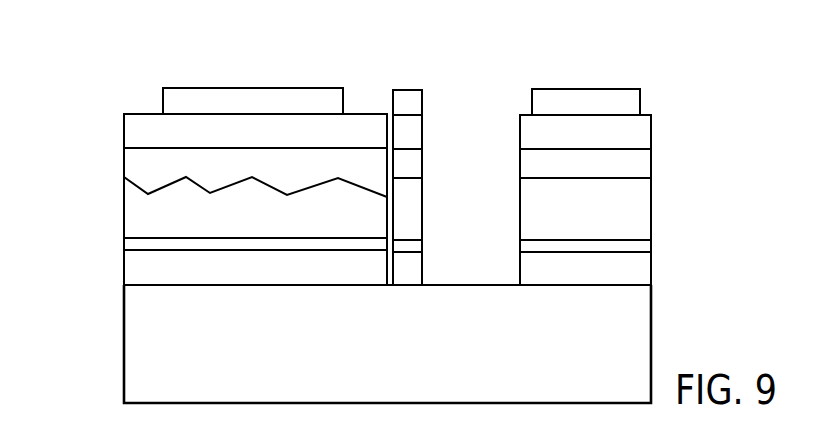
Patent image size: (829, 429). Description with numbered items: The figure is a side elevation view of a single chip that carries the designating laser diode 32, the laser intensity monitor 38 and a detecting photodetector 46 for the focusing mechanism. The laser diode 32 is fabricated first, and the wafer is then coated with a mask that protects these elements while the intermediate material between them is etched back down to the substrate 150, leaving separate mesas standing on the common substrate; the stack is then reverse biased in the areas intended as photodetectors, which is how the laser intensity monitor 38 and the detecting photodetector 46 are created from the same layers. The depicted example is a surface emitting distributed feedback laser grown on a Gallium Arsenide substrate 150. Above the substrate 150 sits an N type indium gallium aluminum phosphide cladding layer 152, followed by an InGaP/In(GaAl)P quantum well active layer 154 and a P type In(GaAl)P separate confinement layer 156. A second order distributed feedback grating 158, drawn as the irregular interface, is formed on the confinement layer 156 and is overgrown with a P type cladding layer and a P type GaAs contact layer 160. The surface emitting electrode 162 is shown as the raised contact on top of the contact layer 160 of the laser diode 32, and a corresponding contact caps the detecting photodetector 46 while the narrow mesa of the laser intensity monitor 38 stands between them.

The Gallium Arsenide substrate 150 is at (124, 349).
The N type cladding layer 152 is at (124, 275).
The quantum well active layer 154 is at (124, 243).
The separate confinement layer 156 is at (124, 212).
The second order distributed feedback grating 158 is at (124, 163).
The P type GaAs contact layer 160 is at (124, 130).
The surface emitting electrode 162 is at (162, 100).
The designating laser diode 32 is at (273, 88).
The laser intensity monitor 38 is at (423, 220).
The detecting photodetector 46 is at (597, 88).